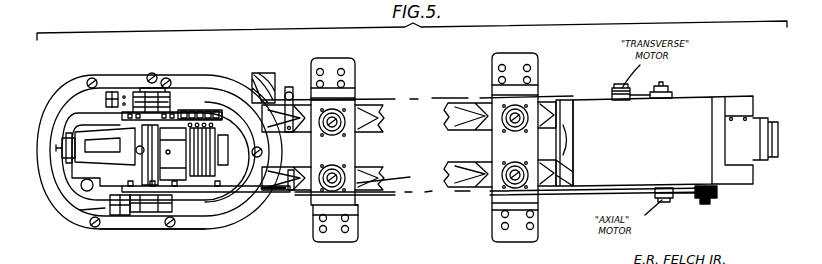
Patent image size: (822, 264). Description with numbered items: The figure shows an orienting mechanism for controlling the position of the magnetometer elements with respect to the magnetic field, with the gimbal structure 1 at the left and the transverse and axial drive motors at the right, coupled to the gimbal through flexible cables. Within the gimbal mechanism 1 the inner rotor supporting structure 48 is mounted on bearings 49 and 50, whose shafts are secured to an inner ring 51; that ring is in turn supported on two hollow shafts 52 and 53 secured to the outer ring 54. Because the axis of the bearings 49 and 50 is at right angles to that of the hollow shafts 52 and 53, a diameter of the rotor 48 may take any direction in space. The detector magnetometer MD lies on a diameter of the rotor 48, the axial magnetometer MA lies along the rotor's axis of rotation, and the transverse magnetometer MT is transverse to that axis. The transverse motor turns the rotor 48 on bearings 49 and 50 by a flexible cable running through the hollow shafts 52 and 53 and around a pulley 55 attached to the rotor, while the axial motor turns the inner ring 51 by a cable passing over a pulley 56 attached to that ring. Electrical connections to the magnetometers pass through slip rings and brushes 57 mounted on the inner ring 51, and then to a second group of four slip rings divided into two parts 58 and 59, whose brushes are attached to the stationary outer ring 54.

The gimbal structure 1 is at (159, 138).
The slip rings (first part) 58 is at (124, 95).
The hollow shaft 52 is at (146, 76).
The detector magnetometer MD is at (190, 110).
The slip rings and brushes 57 is at (223, 120).
The axial magnetometer MA is at (47, 106).
The inner ring 51 is at (46, 126).
The transverse magnetometer MT is at (88, 155).
The bearing 49 is at (80, 165).
The inner rotor supporting structure 48 is at (108, 205).
The pulley 55 is at (108, 205).
The outer ring 54 is at (112, 230).
The slip rings (second part) 59 is at (127, 216).
The hollow shaft 53 is at (150, 214).
The pulley 56 is at (182, 212).
The bearing 50 is at (272, 160).